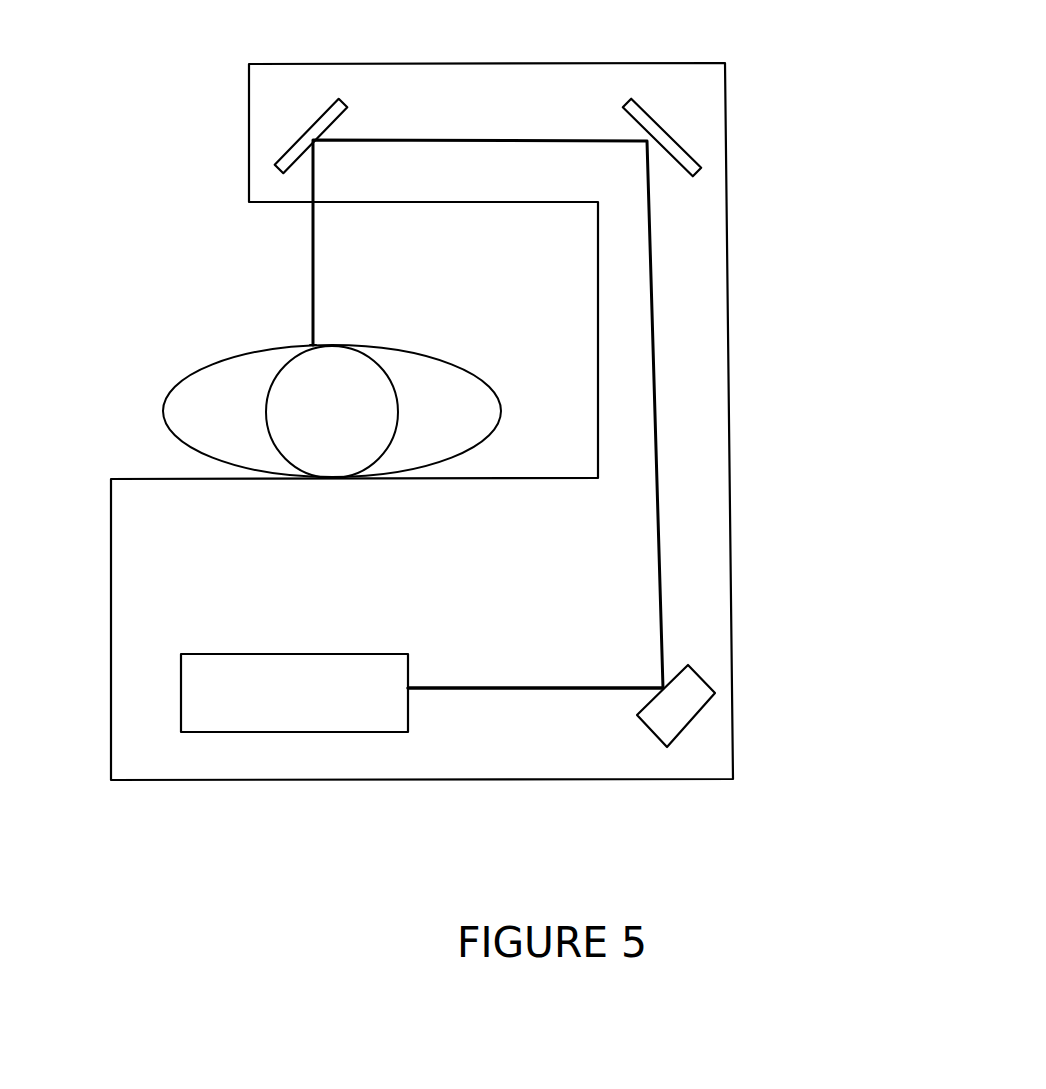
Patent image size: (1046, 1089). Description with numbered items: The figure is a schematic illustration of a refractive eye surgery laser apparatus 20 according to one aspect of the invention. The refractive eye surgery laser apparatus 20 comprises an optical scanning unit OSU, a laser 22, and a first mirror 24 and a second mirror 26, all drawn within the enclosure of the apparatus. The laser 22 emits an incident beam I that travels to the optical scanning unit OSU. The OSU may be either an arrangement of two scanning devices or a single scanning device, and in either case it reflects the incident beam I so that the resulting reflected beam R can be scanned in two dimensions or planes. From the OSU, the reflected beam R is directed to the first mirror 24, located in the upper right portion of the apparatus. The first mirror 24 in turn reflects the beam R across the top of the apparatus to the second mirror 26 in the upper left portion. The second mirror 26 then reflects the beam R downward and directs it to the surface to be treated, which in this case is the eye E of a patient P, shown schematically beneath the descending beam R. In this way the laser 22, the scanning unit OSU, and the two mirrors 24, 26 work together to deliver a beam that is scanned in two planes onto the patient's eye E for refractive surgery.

The refractive eye surgery laser apparatus 20 is at (330, 822).
The laser 22 is at (226, 626).
The first mirror 24 is at (769, 138).
The second mirror 26 is at (211, 136).
The reflected beam R is at (457, 127).
The eye E is at (341, 338).
The patient P is at (182, 375).
The incident beam I is at (477, 677).
The optical scanning unit OSU is at (798, 706).